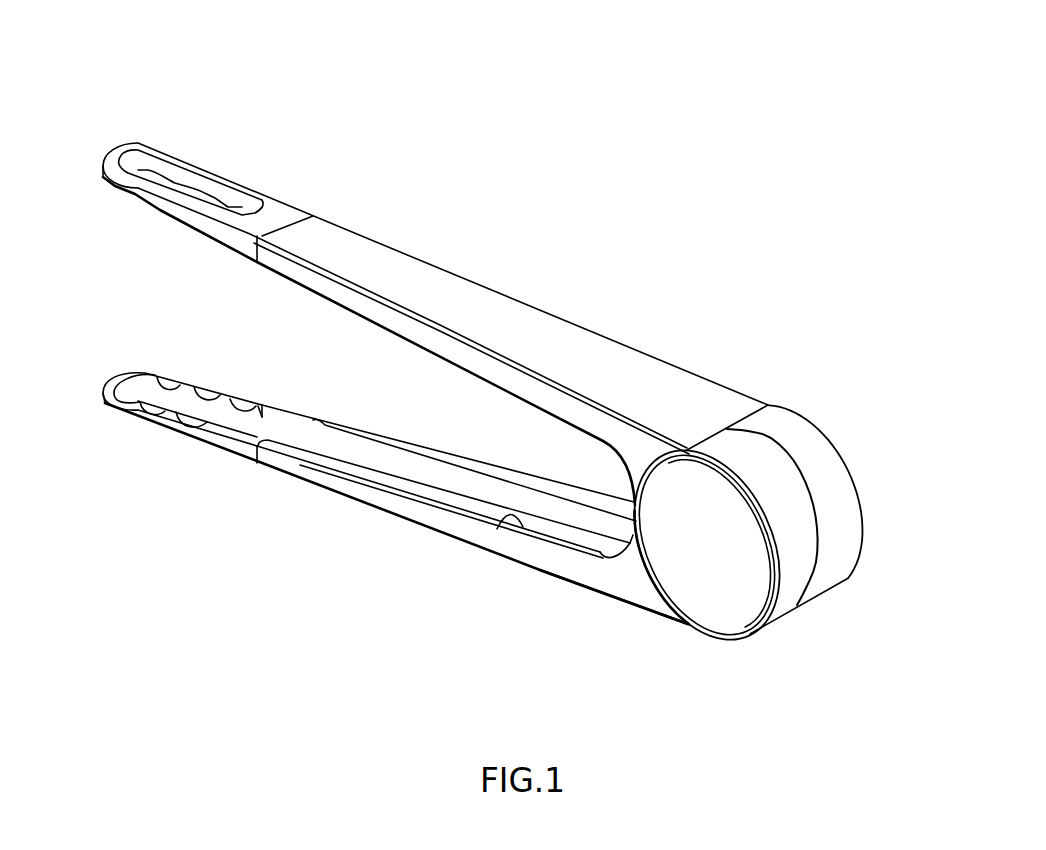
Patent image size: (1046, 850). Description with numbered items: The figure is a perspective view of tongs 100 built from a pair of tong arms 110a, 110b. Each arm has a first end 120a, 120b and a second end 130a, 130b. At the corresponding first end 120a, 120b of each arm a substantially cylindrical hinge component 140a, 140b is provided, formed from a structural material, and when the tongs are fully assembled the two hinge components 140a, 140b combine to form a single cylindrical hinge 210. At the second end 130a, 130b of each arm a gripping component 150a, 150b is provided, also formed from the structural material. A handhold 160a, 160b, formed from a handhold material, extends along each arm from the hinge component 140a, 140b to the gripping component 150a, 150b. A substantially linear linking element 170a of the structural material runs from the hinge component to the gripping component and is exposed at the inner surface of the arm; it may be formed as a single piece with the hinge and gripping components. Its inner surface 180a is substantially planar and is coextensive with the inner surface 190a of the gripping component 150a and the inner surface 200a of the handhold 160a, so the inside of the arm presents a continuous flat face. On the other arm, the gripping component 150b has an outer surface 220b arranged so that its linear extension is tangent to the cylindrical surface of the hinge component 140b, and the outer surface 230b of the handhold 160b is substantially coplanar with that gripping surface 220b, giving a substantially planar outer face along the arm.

The tongs 100 is at (640, 233).
The tong arm 110a is at (390, 538).
The tong arm 110b is at (655, 342).
The first end 120a is at (612, 613).
The first end 120b is at (757, 387).
The second end 130a is at (100, 425).
The second end 130b is at (112, 119).
The hinge component 140a is at (827, 468).
The hinge component 140b is at (790, 590).
The gripping component 150a is at (178, 436).
The gripping component 150b is at (282, 218).
The handhold 160a is at (303, 468).
The handhold 160b is at (443, 282).
The linking element 170a is at (353, 448).
The inner surface of the linking element 180a is at (452, 480).
The inner surface of the gripping component 190a is at (123, 380).
The inner surface of the handhold 200a is at (505, 518).
The cylindrical hinge 210 is at (860, 586).
The outer surface of the gripping component 220b is at (223, 178).
The outer surface of the handhold 230b is at (518, 327).